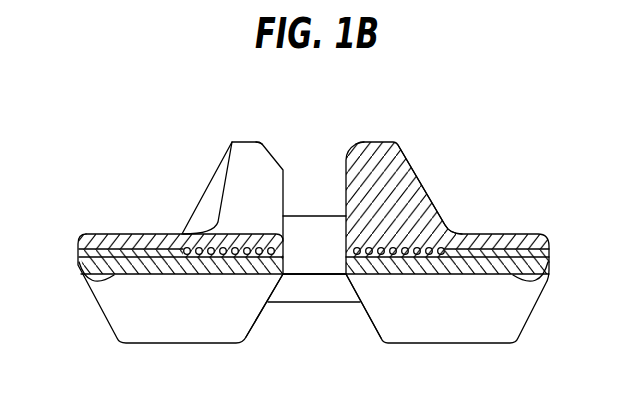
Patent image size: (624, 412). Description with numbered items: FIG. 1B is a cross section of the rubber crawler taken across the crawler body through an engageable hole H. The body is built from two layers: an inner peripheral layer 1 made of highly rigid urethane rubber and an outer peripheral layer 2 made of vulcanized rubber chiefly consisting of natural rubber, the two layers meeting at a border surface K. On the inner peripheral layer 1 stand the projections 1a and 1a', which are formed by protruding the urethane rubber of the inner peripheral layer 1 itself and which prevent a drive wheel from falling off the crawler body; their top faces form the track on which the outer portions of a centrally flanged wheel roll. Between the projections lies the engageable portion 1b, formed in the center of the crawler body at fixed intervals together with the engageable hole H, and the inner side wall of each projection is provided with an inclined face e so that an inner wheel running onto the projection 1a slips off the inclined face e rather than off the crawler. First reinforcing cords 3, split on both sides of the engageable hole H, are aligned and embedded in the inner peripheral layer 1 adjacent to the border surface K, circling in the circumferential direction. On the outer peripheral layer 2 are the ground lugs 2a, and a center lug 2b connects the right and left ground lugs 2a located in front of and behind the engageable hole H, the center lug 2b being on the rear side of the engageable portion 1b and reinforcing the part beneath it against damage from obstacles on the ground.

The inner peripheral layer 1 is at (524, 243).
The projection 1a is at (233, 184).
The projection 1a' is at (447, 184).
The engageable portion 1b is at (315, 230).
The outer peripheral layer 2 is at (541, 290).
The ground lug 2a is at (191, 318).
The center lug 2b is at (302, 290).
The first reinforcing cords 3 is at (186, 245).
The inclined face e is at (274, 149).
The engageable hole H is at (343, 304).
The border surface K is at (92, 287).